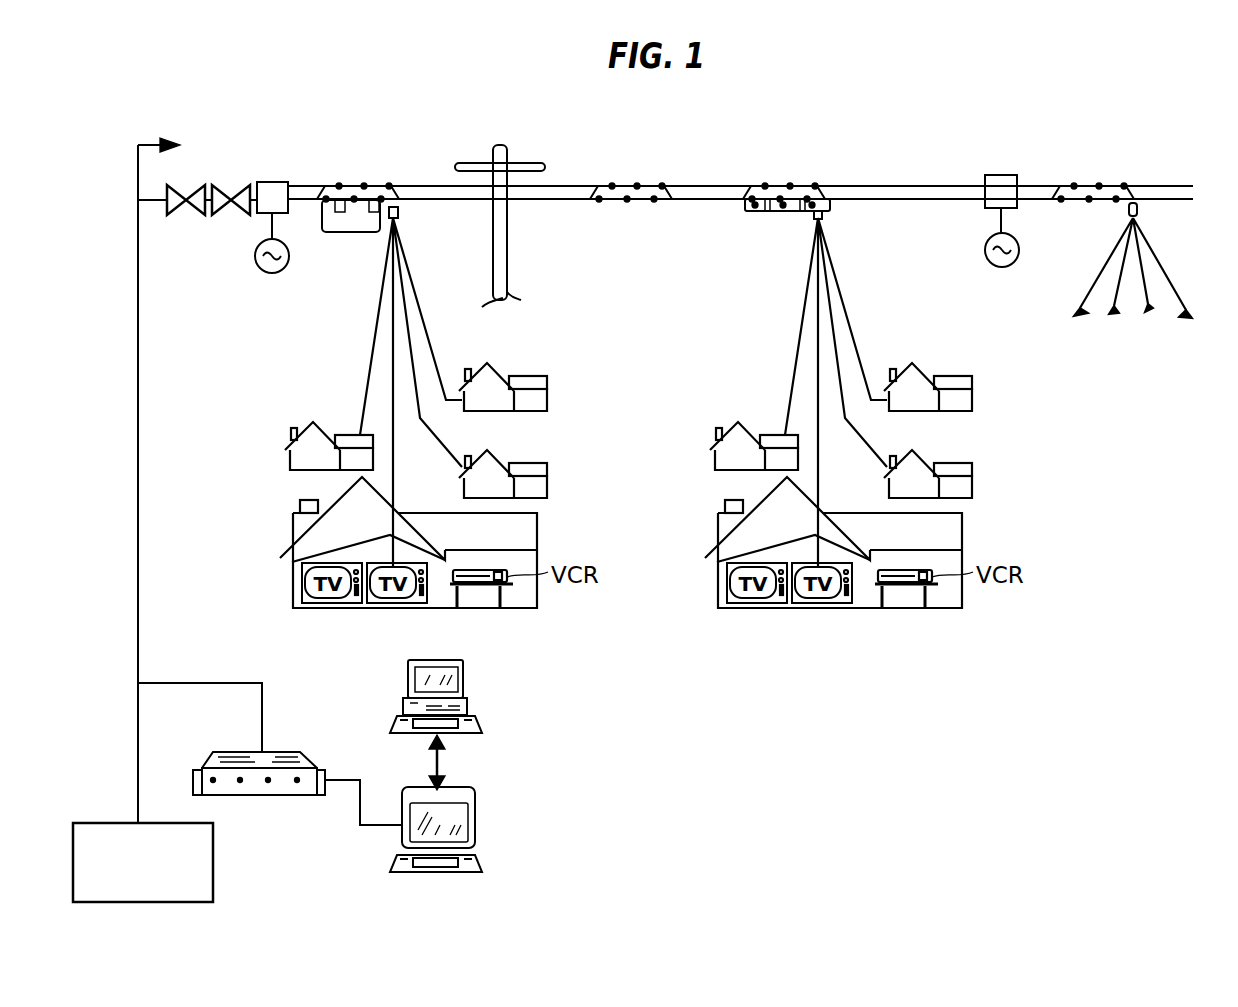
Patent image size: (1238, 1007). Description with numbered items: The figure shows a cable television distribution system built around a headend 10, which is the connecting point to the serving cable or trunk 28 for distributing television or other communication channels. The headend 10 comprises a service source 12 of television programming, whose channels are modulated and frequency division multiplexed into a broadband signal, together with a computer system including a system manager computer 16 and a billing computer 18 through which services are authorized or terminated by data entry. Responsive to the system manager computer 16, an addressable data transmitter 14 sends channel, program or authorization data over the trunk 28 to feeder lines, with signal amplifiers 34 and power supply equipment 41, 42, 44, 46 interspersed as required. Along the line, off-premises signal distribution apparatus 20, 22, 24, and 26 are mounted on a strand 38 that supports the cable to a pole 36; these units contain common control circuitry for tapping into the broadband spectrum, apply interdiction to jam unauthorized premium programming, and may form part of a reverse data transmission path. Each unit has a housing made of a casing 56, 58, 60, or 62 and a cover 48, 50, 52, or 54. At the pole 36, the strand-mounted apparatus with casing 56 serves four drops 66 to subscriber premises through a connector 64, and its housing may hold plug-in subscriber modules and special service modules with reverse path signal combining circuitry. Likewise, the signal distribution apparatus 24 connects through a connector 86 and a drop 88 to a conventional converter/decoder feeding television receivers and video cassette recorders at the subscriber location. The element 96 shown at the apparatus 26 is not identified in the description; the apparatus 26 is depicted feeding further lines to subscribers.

The headend 10 is at (329, 766).
The service source 12 is at (117, 823).
The addressable data transmitter 14 is at (232, 752).
The system manager computer 16 is at (475, 846).
The billing computer 18 is at (463, 688).
The off-premises signal distribution apparatus 20 is at (385, 213).
The off-premises signal distribution apparatus 22 is at (631, 195).
The off-premises signal distribution apparatus 24 is at (819, 200).
The off-premises signal distribution apparatus 26 is at (1133, 253).
The trunk 28 is at (152, 200).
The signal amplifiers 34 is at (228, 186).
The pole 36 is at (497, 148).
The strand 38 is at (708, 186).
The power supply equipment 41 is at (257, 268).
The power supply equipment 42 is at (1000, 268).
The power supply equipment 44 is at (265, 182).
The power supply equipment 46 is at (990, 210).
The cover 48 is at (380, 186).
The cover 50 is at (652, 186).
The cover 52 is at (815, 186).
The cover 54 is at (1128, 186).
The casing 56 is at (352, 232).
The casing 58 is at (618, 201).
The casing 60 is at (787, 212).
The casing 62 is at (1100, 205).
The connector 64 is at (399, 216).
The drops 66 is at (362, 402).
The connector 86 is at (826, 215).
The drops 88 is at (787, 402).
The drop connector 96 is at (1140, 212).